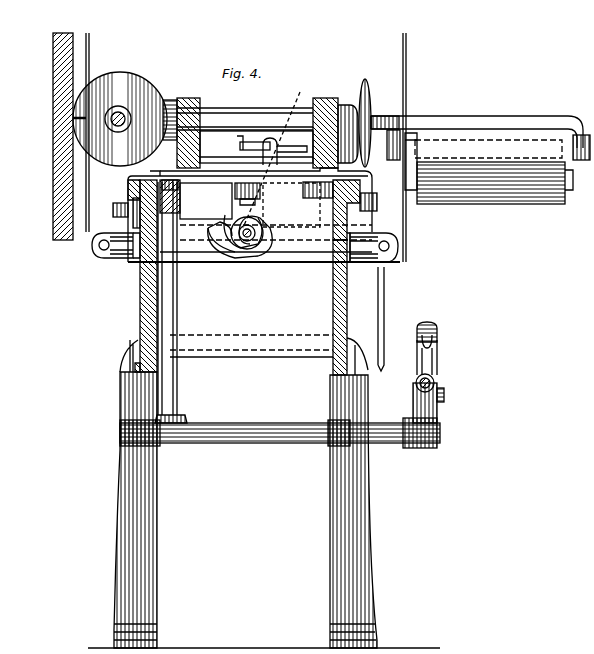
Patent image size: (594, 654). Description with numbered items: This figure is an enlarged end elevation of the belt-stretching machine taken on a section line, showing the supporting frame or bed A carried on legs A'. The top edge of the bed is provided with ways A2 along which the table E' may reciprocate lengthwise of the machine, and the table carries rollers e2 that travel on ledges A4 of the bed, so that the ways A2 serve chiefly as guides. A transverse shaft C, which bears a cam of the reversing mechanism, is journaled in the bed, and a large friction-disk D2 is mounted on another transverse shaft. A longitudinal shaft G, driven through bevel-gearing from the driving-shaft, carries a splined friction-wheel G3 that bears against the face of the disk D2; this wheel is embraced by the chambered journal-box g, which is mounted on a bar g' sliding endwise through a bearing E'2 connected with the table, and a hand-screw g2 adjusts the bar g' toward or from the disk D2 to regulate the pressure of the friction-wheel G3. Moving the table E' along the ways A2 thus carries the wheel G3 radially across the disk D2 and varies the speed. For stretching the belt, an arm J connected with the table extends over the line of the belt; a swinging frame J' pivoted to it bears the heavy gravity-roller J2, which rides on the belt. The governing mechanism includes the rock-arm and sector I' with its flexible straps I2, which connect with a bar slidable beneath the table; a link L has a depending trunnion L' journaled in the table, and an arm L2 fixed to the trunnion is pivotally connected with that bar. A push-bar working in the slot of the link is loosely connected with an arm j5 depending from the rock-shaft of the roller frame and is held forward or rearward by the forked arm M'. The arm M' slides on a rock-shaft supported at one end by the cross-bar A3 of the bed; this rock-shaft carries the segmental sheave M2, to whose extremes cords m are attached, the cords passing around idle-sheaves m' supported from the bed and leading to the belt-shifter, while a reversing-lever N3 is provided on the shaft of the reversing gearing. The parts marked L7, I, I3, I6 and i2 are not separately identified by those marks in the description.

The friction-disk D2 is at (53, 138).
The cord m is at (260, 159).
The friction-wheel G3 is at (72, 118).
The shaft G is at (120, 74).
The movable journal-box g is at (141, 96).
The bar g' is at (245, 107).
The bearing E'2 is at (267, 122).
The link L is at (256, 147).
The slide L7 is at (248, 142).
The arm j5 is at (290, 112).
The forked arm M' is at (291, 178).
The hand-screw g2 is at (368, 78).
The arm J is at (480, 129).
The swinging frame J' is at (488, 149).
The gravity-roller J2 is at (535, 205).
The ways A2 is at (127, 184).
The table E' is at (241, 183).
The roller e2 is at (113, 212).
The flexible strap I2 is at (178, 196).
The arm L2 is at (276, 211).
The trunnion L' is at (258, 194).
The shaft C is at (224, 228).
The segmental wheel or sheave M2 is at (243, 260).
The cross-bar A3 is at (201, 254).
The idle-sheave m' is at (241, 249).
The ledge A4 is at (136, 262).
The supporting frame or bed A is at (244, 277).
The rock-arm and sector I' is at (244, 302).
The leg A' is at (262, 510).
The cross bar I is at (280, 424).
The reversing-lever N3 is at (386, 297).
The bracket I3 is at (413, 380).
The link I6 is at (440, 366).
The pivot i2 is at (430, 320).